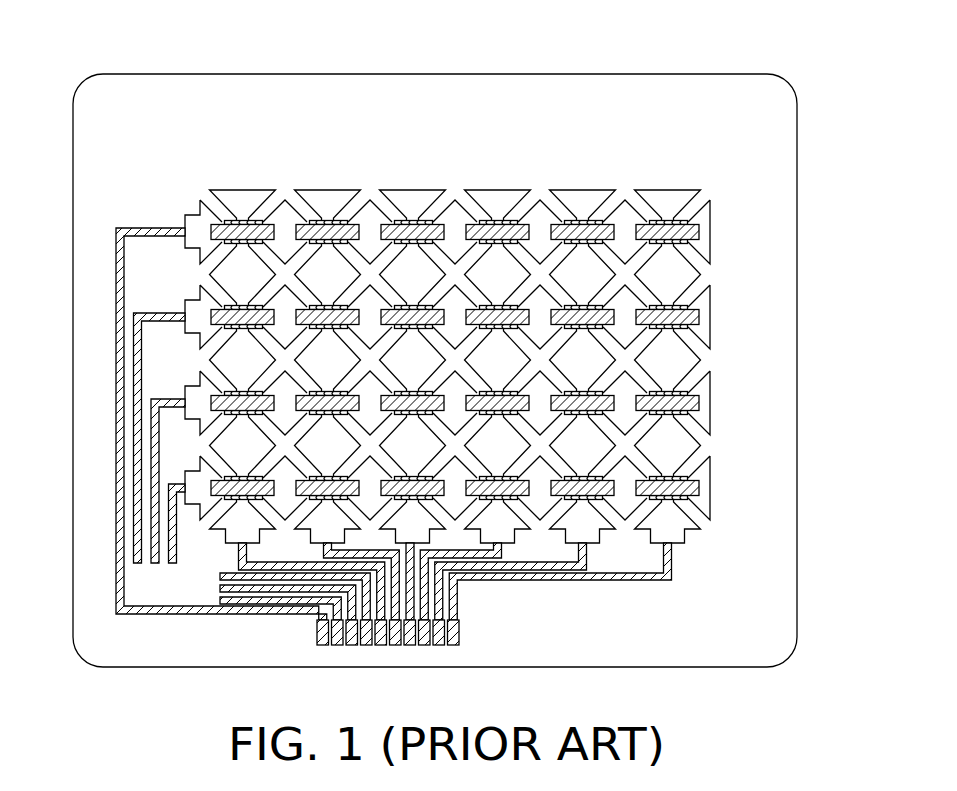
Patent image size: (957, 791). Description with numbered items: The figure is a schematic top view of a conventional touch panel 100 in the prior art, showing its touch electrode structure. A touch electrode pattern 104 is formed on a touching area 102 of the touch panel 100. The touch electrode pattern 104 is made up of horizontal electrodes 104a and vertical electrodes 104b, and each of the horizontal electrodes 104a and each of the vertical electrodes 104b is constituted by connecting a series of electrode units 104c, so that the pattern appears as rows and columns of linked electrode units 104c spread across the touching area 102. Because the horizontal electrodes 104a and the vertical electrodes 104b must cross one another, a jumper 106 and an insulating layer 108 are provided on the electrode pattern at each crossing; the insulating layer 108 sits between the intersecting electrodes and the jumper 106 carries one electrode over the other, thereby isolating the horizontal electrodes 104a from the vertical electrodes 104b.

The touch panel 100 is at (828, 93).
The touching area 102 is at (652, 272).
The touch electrode pattern 104 is at (552, 360).
The horizontal electrodes 104a is at (713, 410).
The vertical electrodes 104b is at (692, 346).
The electrode unit 104c is at (670, 372).
The jumper 106 is at (698, 232).
The insulating layer 108 is at (700, 197).